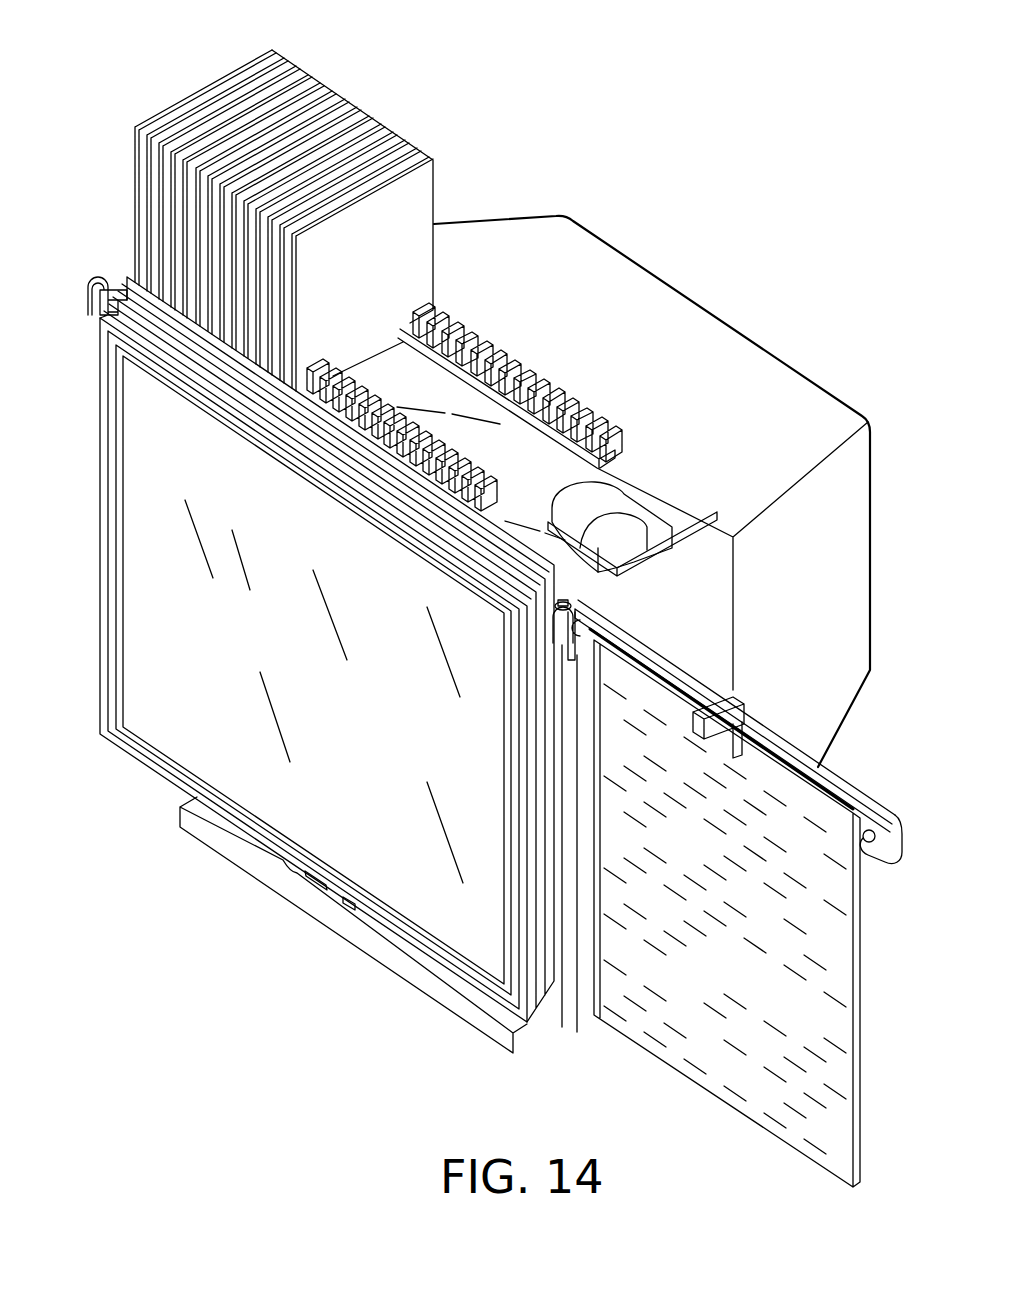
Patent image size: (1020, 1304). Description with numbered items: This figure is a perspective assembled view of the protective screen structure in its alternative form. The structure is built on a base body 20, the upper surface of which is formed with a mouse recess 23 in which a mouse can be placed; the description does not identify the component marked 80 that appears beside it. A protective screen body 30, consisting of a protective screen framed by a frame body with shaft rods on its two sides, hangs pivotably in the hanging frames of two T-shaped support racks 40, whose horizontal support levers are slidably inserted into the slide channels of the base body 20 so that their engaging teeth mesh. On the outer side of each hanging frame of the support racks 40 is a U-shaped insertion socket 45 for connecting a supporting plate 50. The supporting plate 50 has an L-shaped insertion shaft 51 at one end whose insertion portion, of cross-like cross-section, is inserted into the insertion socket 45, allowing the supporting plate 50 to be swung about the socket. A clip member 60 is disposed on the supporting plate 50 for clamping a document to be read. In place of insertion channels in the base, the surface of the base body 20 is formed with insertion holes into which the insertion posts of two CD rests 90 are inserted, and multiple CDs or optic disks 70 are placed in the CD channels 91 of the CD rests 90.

The base body 20 is at (707, 488).
The mouse recess 23 is at (552, 520).
The protective screen body 30 is at (105, 597).
The support rack 40 is at (98, 318).
The U-shaped insertion socket 45 is at (88, 297).
The supporting plate 50 is at (850, 793).
The insertion shaft 51 is at (560, 600).
The clip member 60 is at (735, 707).
The CDs or optic disks 70 is at (422, 197).
The lamp unit 80 is at (618, 497).
The CD rest 90 is at (607, 452).
The CD channels 91 is at (537, 392).